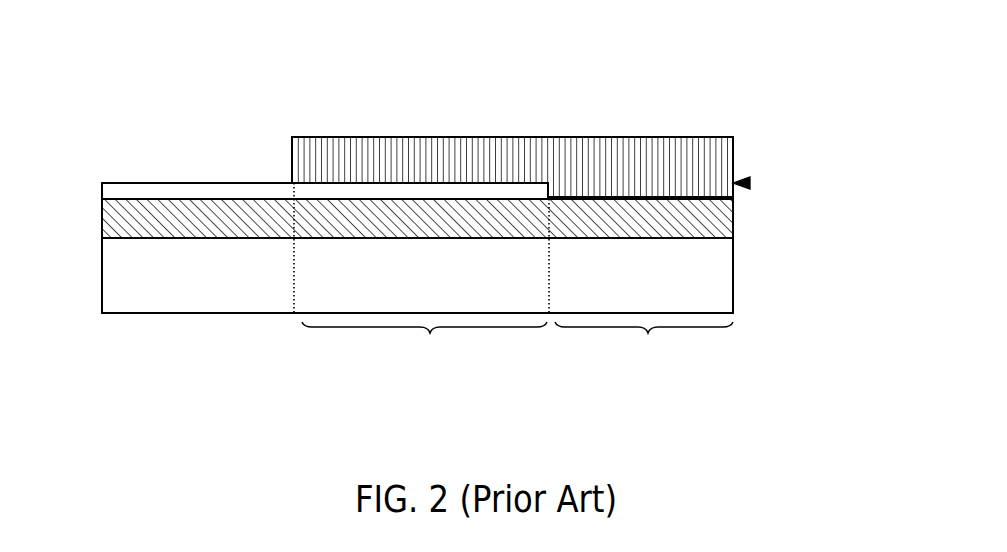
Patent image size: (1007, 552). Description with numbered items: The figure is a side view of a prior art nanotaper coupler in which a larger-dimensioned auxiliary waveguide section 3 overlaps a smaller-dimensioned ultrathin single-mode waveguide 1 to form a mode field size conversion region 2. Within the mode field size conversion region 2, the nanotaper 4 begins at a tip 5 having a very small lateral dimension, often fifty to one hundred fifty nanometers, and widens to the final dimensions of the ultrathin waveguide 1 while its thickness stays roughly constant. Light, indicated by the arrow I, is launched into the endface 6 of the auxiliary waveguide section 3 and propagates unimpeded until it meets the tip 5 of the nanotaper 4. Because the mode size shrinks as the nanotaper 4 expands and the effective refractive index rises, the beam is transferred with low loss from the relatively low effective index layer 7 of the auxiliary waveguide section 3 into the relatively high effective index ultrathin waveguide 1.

The ultrathin single-mode waveguide 1 is at (120, 190).
The mode field size conversion region 2 is at (420, 287).
The auxiliary waveguide section 3 is at (641, 289).
The nanotaper 4 is at (387, 188).
The tip 5 is at (555, 192).
The endface 6 is at (733, 147).
The low effective index layer 7 is at (647, 165).
The current I is at (750, 183).